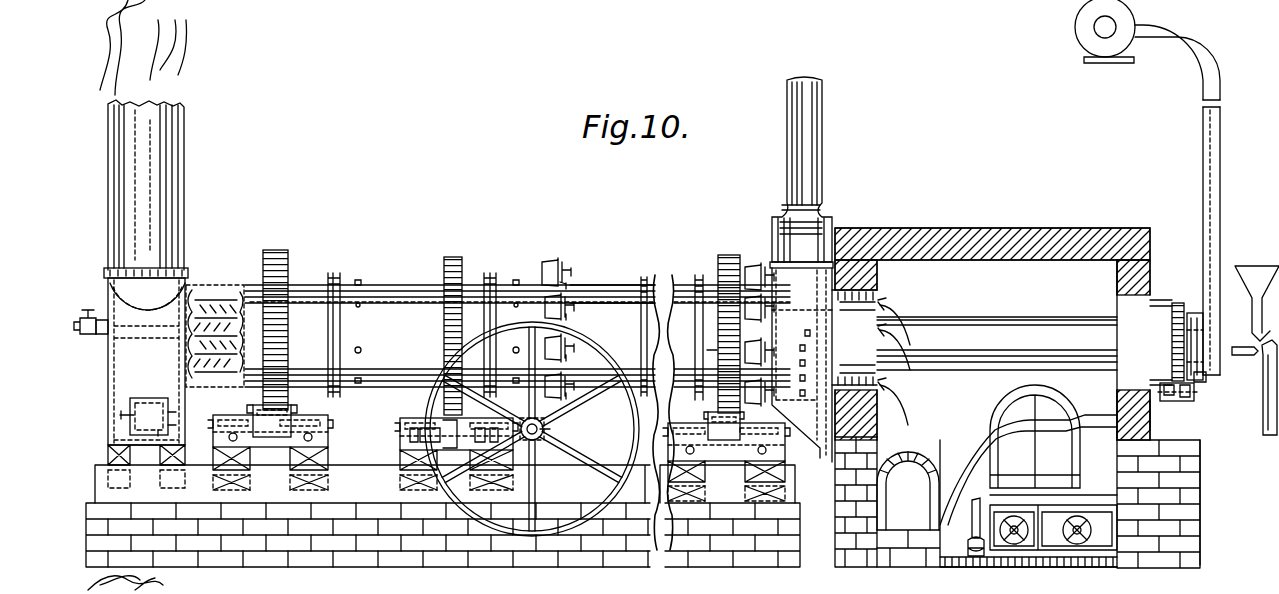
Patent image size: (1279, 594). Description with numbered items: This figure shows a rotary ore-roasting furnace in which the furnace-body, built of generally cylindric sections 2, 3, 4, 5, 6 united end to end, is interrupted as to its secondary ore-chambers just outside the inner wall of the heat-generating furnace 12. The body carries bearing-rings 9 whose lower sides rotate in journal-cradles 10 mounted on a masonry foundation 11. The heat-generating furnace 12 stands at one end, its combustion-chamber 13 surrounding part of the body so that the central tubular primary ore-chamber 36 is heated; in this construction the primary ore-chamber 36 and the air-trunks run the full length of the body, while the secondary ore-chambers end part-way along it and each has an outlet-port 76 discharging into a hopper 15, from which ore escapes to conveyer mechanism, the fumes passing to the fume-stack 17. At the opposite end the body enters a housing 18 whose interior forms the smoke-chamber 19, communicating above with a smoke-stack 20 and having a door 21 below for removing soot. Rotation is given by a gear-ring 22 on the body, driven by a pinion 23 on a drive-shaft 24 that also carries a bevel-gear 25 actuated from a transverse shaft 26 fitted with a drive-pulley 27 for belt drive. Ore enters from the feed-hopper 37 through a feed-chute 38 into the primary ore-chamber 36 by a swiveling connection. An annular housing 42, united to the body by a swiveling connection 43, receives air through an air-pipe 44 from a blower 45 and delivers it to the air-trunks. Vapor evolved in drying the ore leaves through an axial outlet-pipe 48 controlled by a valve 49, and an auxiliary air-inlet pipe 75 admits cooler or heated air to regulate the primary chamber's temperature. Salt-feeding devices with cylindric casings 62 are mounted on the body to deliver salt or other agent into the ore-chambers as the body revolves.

The furnace-body section 2 is at (244, 288).
The furnace-body section 3 is at (394, 292).
The furnace-body section 4 is at (586, 296).
The furnace-body section 5 is at (658, 292).
The furnace-body section 6 is at (731, 335).
The bearing-ring 9 is at (288, 258).
The journal-cradle 10 is at (294, 416).
The masonry foundation 11 is at (612, 558).
The heat-generating furnace 12 is at (974, 230).
The combustion-chamber 13 is at (997, 413).
The hopper 15 is at (818, 470).
The fume-stack 17 is at (815, 210).
The housing 18 is at (108, 302).
The smoke-chamber 19 is at (182, 276).
The smoke-stack 20 is at (162, 234).
The door 21 is at (143, 398).
The gear-ring 22 is at (460, 268).
The pinion 23 is at (400, 441).
The drive-shaft 24 is at (404, 472).
The bevel-gear 25 is at (524, 422).
The transverse shaft 26 is at (546, 430).
The wheel 27 is at (640, 420).
The primary ore-chamber 36 is at (997, 343).
The feed-hopper 37 is at (1257, 302).
The feed-chute 38 is at (1268, 378).
The annular housing 42 is at (1212, 332).
The swiveling connection 43 is at (1202, 380).
The air-pipe 44 is at (1218, 192).
The blower 45 is at (1108, 58).
The outlet-pipe 48 is at (100, 338).
The controlling valve 49 is at (80, 336).
The cylindric casing 62 is at (552, 262).
The auxiliary air-inlet pipe 75 is at (1244, 356).
The outlet-port 76 is at (794, 292).